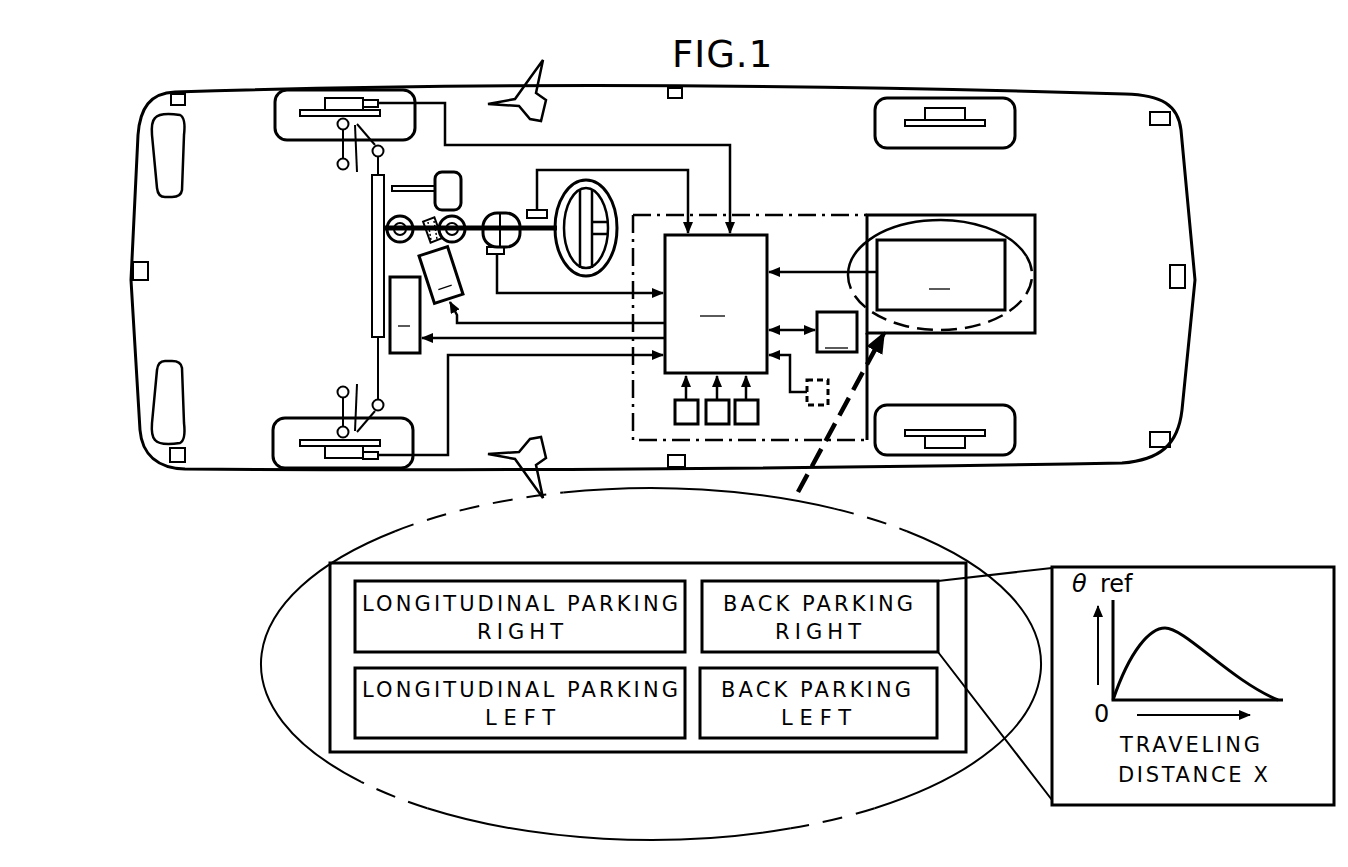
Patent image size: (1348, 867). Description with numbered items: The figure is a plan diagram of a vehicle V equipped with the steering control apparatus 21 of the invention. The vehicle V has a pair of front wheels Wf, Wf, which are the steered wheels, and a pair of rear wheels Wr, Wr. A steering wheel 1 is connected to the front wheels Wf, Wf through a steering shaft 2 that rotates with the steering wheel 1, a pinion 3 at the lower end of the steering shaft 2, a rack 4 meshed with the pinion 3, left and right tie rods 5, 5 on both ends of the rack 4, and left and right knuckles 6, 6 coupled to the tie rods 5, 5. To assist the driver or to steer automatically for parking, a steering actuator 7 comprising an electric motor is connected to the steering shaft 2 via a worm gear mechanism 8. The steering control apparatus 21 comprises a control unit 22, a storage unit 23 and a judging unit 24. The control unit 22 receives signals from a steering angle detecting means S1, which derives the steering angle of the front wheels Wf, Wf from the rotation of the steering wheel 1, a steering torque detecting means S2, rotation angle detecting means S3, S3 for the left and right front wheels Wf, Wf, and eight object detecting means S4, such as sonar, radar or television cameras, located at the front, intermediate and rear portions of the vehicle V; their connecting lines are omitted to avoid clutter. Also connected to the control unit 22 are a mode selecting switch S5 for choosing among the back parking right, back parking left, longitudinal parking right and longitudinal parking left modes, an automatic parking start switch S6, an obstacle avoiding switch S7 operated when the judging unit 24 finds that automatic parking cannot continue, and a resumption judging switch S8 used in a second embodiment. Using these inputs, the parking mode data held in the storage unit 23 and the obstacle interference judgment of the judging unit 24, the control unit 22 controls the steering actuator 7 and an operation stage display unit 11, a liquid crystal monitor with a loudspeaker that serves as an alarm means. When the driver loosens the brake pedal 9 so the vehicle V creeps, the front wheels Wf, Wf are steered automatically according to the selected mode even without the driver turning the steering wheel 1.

The steering wheel 1 is at (600, 212).
The steering shaft 2 is at (523, 242).
The pinion 3 is at (383, 207).
The rack 4 is at (370, 283).
The tie rods 5 is at (384, 158).
The knuckles 6 is at (357, 168).
The steering actuator 7 is at (542, 285).
The worm gear mechanism 8 is at (428, 240).
The brake pedal 9 is at (470, 185).
The operation stage display unit 11 is at (527, 315).
The steering control apparatus 21 is at (1030, 258).
The control unit 22 is at (716, 304).
The storage unit 23 is at (900, 275).
The judging unit 24 is at (813, 332).
The steering angle detecting means S1 is at (527, 213).
The steering torque detecting means S2 is at (486, 253).
The rotation angle detecting means S3 is at (376, 96).
The object detecting means S4 is at (185, 103).
The mode selecting switch S5 is at (680, 410).
The automatic parking start switch S6 is at (710, 424).
The obstacle avoiding switch S7 is at (744, 417).
The resumption judging switch S8 is at (815, 406).
The vehicle V is at (244, 480).
The front wheels Wf is at (286, 141).
The rear wheels Wr is at (1013, 127).